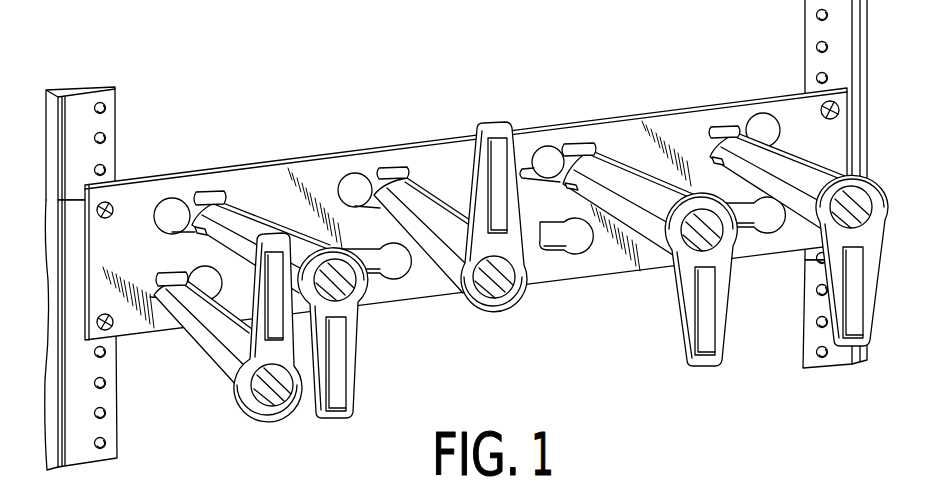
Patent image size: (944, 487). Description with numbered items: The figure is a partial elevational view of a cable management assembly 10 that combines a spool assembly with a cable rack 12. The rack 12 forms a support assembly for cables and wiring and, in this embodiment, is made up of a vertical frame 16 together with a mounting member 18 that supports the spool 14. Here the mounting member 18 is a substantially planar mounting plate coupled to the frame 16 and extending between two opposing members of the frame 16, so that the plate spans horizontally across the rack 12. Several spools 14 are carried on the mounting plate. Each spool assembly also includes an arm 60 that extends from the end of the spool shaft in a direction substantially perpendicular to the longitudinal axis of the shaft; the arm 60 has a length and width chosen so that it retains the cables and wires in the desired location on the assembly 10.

The cable management assembly 10 is at (83, 91).
The cable rack 12 is at (118, 134).
The spool 14 is at (258, 211).
The vertical frame 16 is at (118, 418).
The mounting member 18 is at (372, 150).
The arm 60 is at (357, 380).